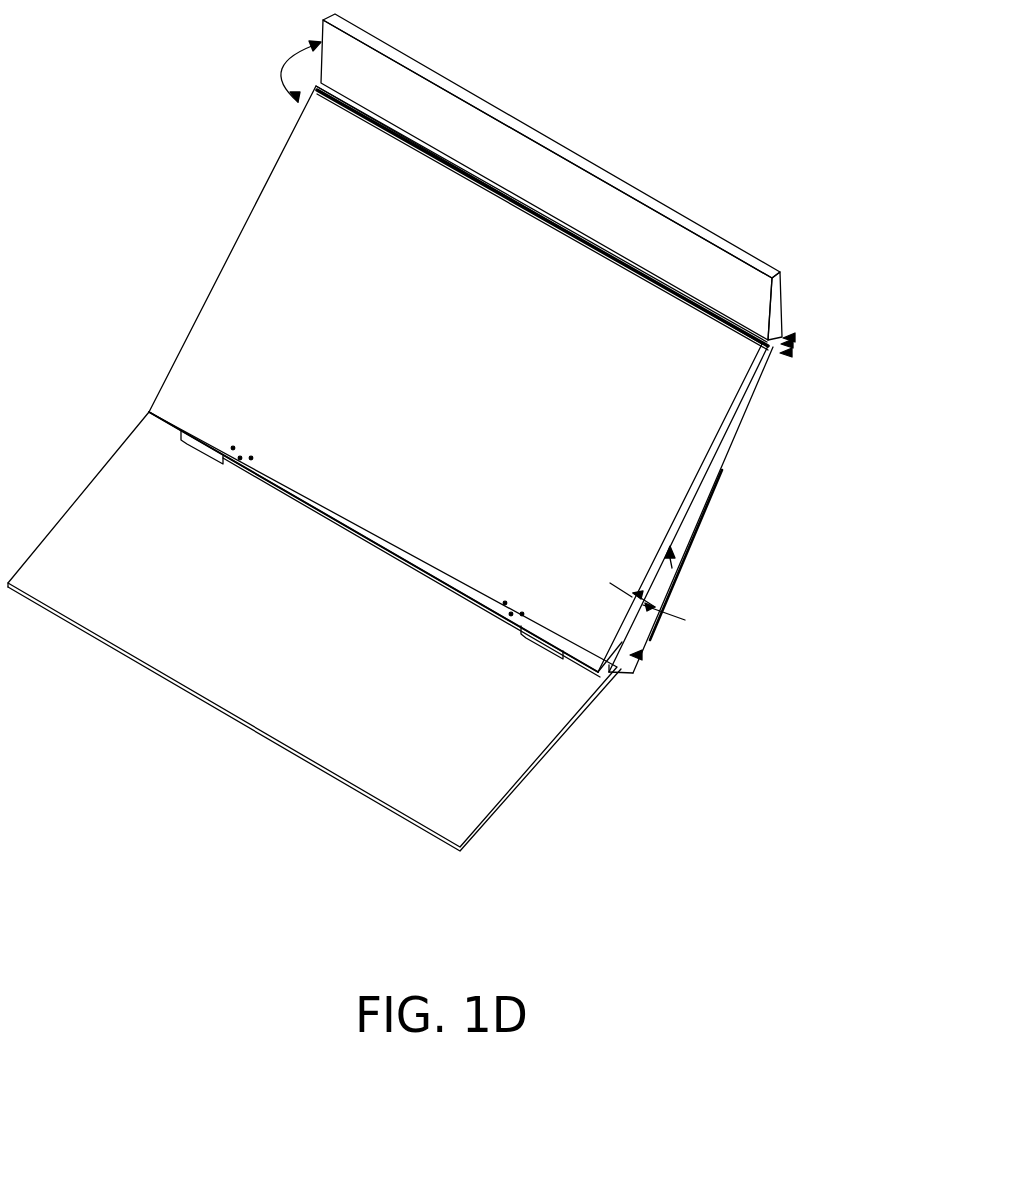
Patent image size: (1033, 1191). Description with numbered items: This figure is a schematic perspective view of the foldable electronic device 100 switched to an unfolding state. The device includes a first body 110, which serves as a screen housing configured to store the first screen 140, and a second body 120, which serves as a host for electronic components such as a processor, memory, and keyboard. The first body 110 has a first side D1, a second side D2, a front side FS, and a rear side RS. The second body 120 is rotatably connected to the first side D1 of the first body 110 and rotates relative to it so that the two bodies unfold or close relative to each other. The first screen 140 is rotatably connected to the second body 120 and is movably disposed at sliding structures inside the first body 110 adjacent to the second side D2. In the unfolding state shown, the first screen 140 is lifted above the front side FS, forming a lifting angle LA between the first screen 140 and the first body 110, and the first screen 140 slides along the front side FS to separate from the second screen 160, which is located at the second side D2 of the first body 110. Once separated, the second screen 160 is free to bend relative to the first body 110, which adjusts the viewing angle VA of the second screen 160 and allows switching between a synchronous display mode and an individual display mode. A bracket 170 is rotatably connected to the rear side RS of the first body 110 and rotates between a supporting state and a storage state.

The foldable electronic device 100 is at (448, 480).
The first body 110 is at (742, 420).
The second body 120 is at (533, 718).
The first screen 140 is at (730, 387).
The second screen 160 is at (722, 282).
The bracket 170 is at (712, 500).
The viewing angle VA is at (282, 68).
The first side D1 is at (642, 655).
The second side D2 is at (783, 338).
The rear side RS is at (780, 353).
The front side FS is at (678, 570).
The lifting angle LA is at (652, 627).